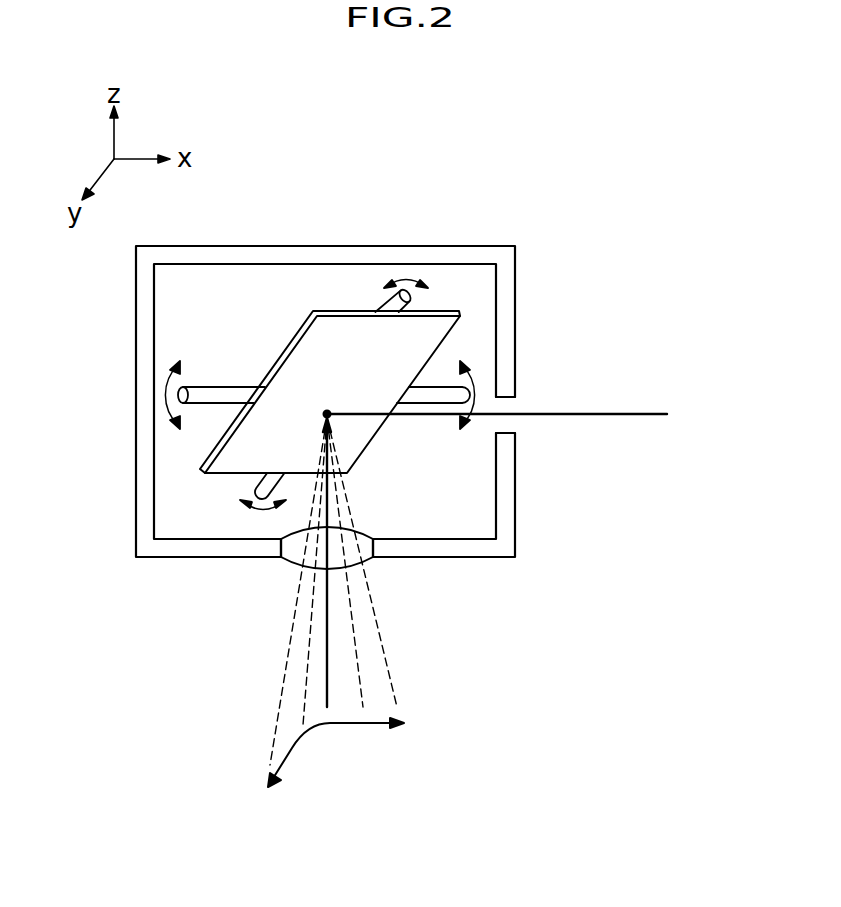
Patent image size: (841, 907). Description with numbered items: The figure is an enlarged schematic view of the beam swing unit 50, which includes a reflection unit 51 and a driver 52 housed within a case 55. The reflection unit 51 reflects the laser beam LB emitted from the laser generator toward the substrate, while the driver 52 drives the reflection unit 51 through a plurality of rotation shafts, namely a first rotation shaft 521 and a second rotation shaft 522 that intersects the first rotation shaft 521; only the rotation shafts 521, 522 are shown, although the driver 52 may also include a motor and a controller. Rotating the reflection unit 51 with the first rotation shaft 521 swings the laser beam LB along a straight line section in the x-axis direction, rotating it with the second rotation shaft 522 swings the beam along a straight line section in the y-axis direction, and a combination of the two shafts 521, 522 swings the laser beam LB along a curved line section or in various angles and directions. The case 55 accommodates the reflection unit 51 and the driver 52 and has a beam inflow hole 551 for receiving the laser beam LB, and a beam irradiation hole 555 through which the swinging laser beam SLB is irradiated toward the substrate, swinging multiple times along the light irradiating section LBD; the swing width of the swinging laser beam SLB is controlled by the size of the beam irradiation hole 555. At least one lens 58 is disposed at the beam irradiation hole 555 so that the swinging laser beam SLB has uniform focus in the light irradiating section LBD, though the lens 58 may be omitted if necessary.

The beam swing unit 50 is at (380, 230).
The reflection unit 51 is at (435, 311).
The driver 52 is at (327, 197).
The first rotation shaft 521 is at (218, 386).
The second rotation shaft 522 is at (383, 303).
The case 55 is at (516, 272).
The beam inflow hole 551 is at (506, 399).
The beam irradiation hole 555 is at (283, 550).
The lens 58 is at (360, 566).
The laser beam LB is at (633, 413).
The swinging laser beam SLB is at (328, 638).
The light irradiating section LBD is at (336, 752).